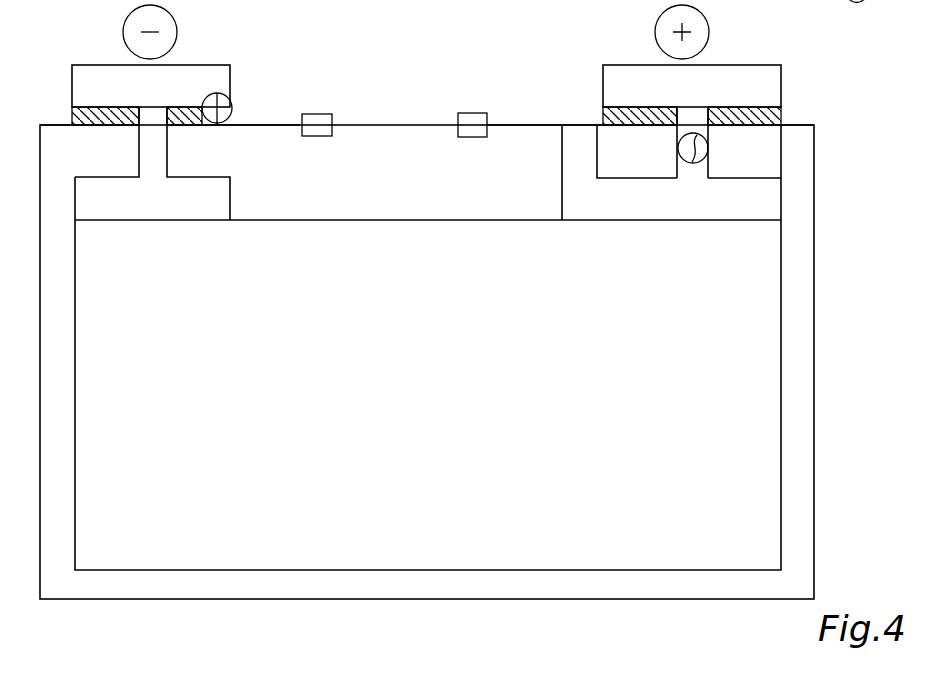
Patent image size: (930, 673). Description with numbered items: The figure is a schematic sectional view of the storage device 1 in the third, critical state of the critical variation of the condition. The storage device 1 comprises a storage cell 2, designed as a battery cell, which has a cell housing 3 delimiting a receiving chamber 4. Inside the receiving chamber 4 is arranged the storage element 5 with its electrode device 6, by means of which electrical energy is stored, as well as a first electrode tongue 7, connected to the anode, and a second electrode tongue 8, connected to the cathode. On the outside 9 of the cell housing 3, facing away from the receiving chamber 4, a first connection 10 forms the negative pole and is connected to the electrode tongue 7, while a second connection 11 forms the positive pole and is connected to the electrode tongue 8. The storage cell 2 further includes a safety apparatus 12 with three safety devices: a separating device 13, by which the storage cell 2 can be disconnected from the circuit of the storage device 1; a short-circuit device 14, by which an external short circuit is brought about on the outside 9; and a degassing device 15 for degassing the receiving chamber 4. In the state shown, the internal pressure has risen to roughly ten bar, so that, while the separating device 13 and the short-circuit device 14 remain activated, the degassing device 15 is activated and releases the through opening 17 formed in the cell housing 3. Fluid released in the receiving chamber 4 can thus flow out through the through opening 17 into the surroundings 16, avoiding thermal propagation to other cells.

The storage device 1 is at (813, 71).
The storage cell 2 is at (814, 122).
The cell housing 3 is at (815, 270).
The receiving chamber 4 is at (283, 192).
The storage element 5 is at (774, 433).
The electrode device 6 is at (774, 532).
The first electrode tongue 7 is at (150, 200).
The second electrode tongue 8 is at (721, 205).
The outside 9 is at (249, 120).
The first connection 10 is at (170, 88).
The second connection 11 is at (660, 88).
The safety apparatus 12 is at (779, 157).
The separating device 13 is at (693, 163).
The short-circuit device 14 is at (225, 126).
The degassing device 15 is at (483, 116).
The surroundings 16 is at (263, 32).
The through opening 17 is at (397, 118).